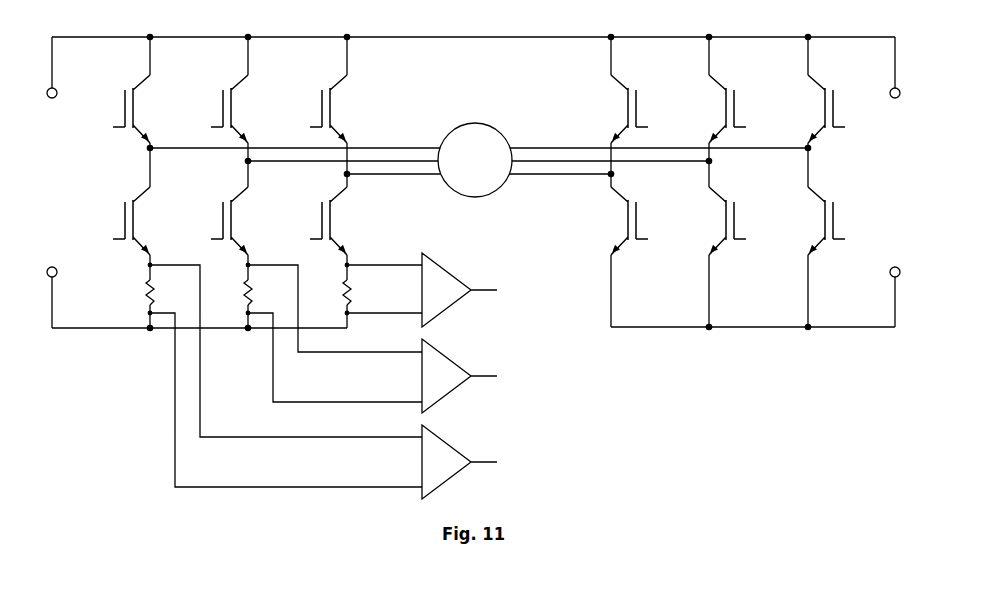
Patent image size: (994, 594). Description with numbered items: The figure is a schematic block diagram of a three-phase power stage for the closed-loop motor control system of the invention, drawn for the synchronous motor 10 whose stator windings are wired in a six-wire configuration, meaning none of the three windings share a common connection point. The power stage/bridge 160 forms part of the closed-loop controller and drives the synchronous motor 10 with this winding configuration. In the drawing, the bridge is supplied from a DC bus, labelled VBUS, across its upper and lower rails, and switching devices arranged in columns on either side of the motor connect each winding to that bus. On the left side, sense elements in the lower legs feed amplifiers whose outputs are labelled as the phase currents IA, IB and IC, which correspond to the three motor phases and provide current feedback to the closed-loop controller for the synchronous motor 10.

The synchronous motor 10 is at (450, 129).
The 3-phase power stage/bridge 160 is at (740, 341).
The phase A current sense amplifier IA is at (473, 462).
The phase B current sense amplifier IB is at (473, 376).
The phase C current sense amplifier IC is at (473, 290).
The DC bus voltage terminal VBUS is at (473, 174).